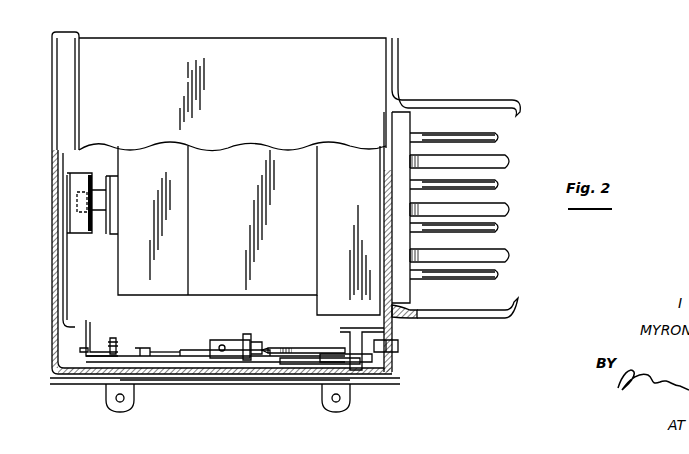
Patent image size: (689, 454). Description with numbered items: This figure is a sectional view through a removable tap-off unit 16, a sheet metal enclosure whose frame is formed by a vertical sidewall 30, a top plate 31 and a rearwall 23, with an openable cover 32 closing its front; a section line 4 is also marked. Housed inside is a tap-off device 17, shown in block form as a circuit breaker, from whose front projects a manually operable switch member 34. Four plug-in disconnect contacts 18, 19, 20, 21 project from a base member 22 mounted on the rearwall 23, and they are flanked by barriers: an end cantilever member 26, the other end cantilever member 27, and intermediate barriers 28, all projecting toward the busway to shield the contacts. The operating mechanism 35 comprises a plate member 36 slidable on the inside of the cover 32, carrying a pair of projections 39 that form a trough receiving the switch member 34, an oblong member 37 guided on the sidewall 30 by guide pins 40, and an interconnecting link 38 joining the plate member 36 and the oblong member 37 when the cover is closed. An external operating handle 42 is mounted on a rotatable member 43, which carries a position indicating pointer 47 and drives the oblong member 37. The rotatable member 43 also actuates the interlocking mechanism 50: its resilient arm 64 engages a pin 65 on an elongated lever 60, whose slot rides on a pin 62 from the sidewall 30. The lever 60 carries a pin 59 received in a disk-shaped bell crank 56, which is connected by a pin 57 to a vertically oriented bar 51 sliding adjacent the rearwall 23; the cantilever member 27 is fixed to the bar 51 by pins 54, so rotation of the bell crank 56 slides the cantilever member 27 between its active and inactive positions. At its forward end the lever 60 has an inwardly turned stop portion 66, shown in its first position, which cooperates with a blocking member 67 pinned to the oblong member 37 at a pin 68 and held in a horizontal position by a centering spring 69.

The section line 4 is at (46, 306).
The tap-off unit 16 is at (199, 38).
The tap-off device 17 is at (118, 264).
The disconnect contact 18 is at (501, 276).
The disconnect contact 19 is at (501, 227).
The disconnect contact 20 is at (501, 184).
The disconnect contact 21 is at (501, 137).
The base member 22 is at (392, 159).
The rearwall 23 is at (406, 318).
The cantilever member 26 is at (453, 104).
The cantilever member 27 is at (464, 313).
The intermediate barriers 28 is at (513, 162).
The sidewall 30 is at (388, 374).
The top plate 31 is at (300, 38).
The cover 32 is at (77, 32).
The switch member 34 is at (108, 190).
The operating mechanism 35 is at (164, 316).
The plate member 36 is at (52, 182).
The oblong member 37 is at (90, 330).
The interconnecting link 38 is at (63, 297).
The projections 39 is at (74, 173).
The guide pins 40 is at (98, 374).
The operating handle 42 is at (324, 400).
The rotatable member 43 is at (280, 384).
The position indicating pointer 47 is at (178, 384).
The interlocking mechanism 50 is at (312, 338).
The elongated bar 51 is at (366, 318).
The pins 54 is at (400, 346).
The bell crank 56 is at (276, 348).
The pin 57 is at (346, 336).
The pin 59 is at (362, 364).
The lever 60 is at (196, 350).
The pin 62 is at (158, 354).
The resilient arm 64 is at (228, 340).
The pin 65 is at (249, 334).
The stop portion 66 is at (146, 348).
The blocking member 67 is at (135, 398).
The pin 68 is at (114, 338).
The centering spring 69 is at (80, 348).